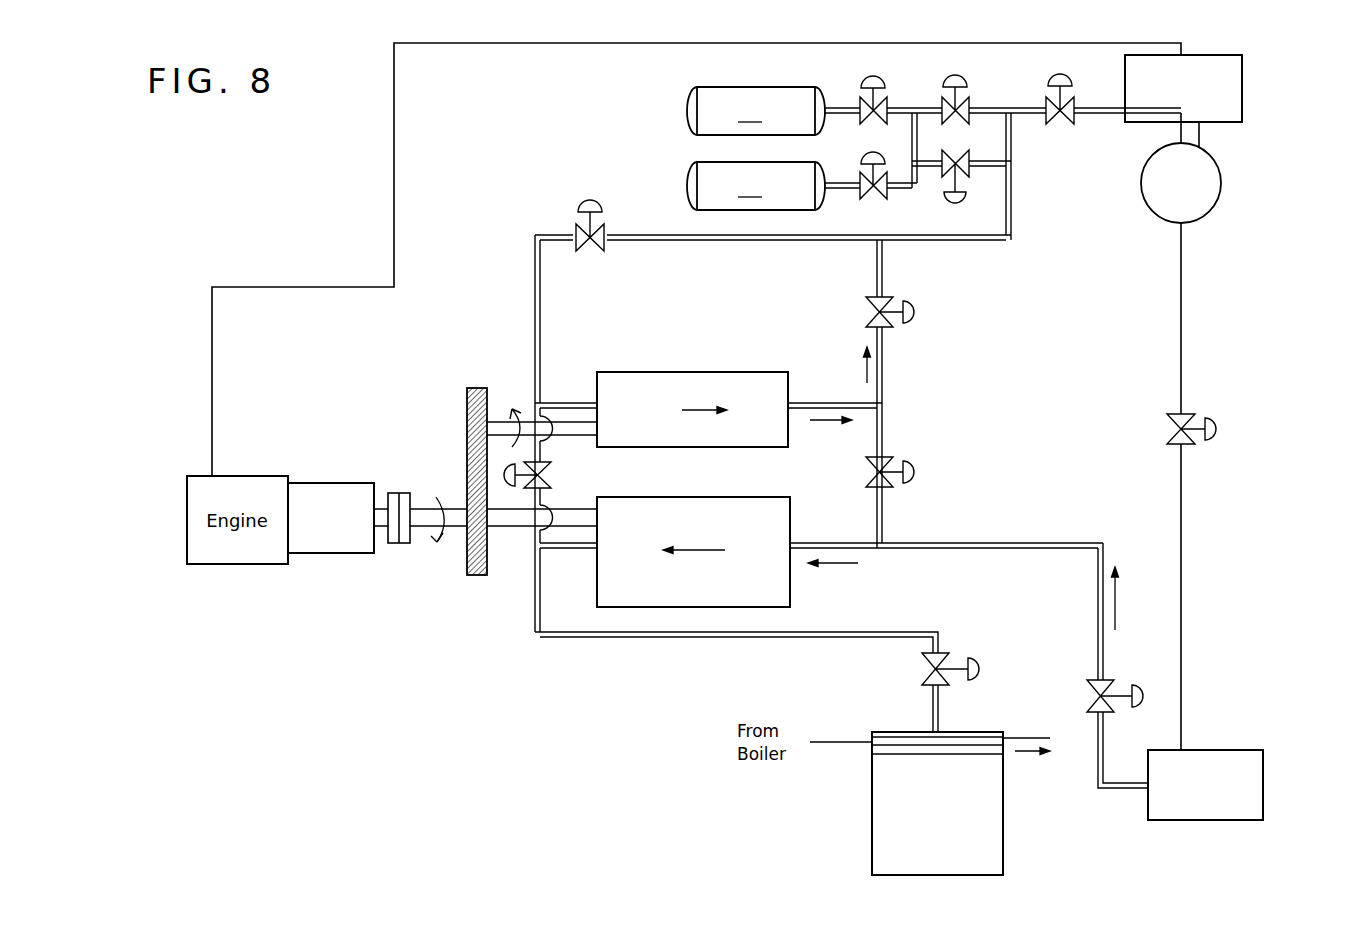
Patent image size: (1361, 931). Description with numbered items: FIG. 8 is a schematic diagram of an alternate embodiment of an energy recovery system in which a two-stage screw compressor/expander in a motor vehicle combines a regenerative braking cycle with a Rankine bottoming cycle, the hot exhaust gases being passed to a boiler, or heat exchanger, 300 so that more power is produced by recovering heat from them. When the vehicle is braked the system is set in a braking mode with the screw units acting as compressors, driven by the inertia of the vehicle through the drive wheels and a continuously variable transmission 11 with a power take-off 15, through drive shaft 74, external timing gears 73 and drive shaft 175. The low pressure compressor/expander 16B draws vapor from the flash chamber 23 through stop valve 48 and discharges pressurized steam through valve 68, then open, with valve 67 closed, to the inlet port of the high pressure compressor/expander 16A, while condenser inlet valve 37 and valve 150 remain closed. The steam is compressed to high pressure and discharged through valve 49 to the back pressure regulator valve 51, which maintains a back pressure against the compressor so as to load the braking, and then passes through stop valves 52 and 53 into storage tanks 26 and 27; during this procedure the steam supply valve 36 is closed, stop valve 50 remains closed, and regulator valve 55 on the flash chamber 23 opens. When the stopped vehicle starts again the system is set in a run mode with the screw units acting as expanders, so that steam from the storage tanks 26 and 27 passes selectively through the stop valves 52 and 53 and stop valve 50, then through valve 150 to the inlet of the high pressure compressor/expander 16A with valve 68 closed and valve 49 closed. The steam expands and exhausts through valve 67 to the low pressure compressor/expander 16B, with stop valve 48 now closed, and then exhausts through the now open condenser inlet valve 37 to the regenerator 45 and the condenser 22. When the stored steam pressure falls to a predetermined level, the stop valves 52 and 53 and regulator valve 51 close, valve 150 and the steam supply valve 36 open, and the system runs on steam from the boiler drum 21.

The continuously variable transmission 11 is at (308, 553).
The power take-off 15 is at (393, 492).
The high pressure compressor/expander 16A is at (706, 380).
The low pressure compressor/expander 16B is at (696, 518).
The boiler drum 21 is at (1208, 212).
The condenser 22 is at (997, 838).
The flash chamber 23 is at (1262, 752).
The storage tank 26 is at (756, 111).
The storage tank 27 is at (756, 186).
The steam supply valve 36 is at (1070, 122).
The condenser inlet valve 37 is at (977, 675).
The regenerator 45 is at (893, 731).
The stop valve 48 is at (1140, 702).
The valve 49 is at (886, 326).
The stop valve 50 is at (960, 200).
The regulator valve 51 is at (960, 122).
The stop valve 52 is at (873, 123).
The stop valve 53 is at (873, 198).
The regulator valve 55 is at (1192, 444).
The valve 67 is at (886, 486).
The valve 68 is at (551, 477).
The external timing gears 73 is at (466, 427).
The drive shaft 74 is at (425, 520).
The valve 150 is at (600, 252).
The drive shaft 175 is at (504, 418).
The boiler 300 is at (1242, 110).